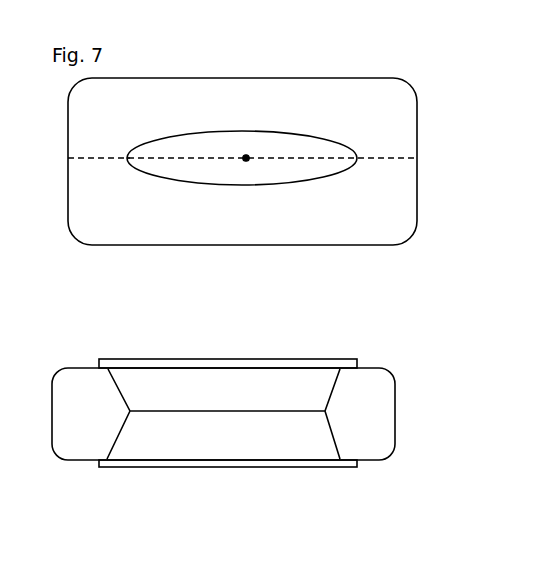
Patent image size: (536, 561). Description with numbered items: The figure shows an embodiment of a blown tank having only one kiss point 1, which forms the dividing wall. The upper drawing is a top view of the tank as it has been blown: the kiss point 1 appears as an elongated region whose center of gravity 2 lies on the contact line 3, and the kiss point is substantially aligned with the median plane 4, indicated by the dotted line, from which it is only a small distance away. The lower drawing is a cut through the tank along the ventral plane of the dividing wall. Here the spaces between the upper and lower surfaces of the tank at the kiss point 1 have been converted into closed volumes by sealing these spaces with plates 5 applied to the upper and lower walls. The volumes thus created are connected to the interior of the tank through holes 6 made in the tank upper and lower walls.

The kiss point 1 is at (298, 145).
The center of gravity 2 is at (252, 163).
The contact line 3 is at (94, 155).
The median plane 4 is at (114, 163).
The plates 5 is at (291, 358).
The holes 6 is at (104, 374).